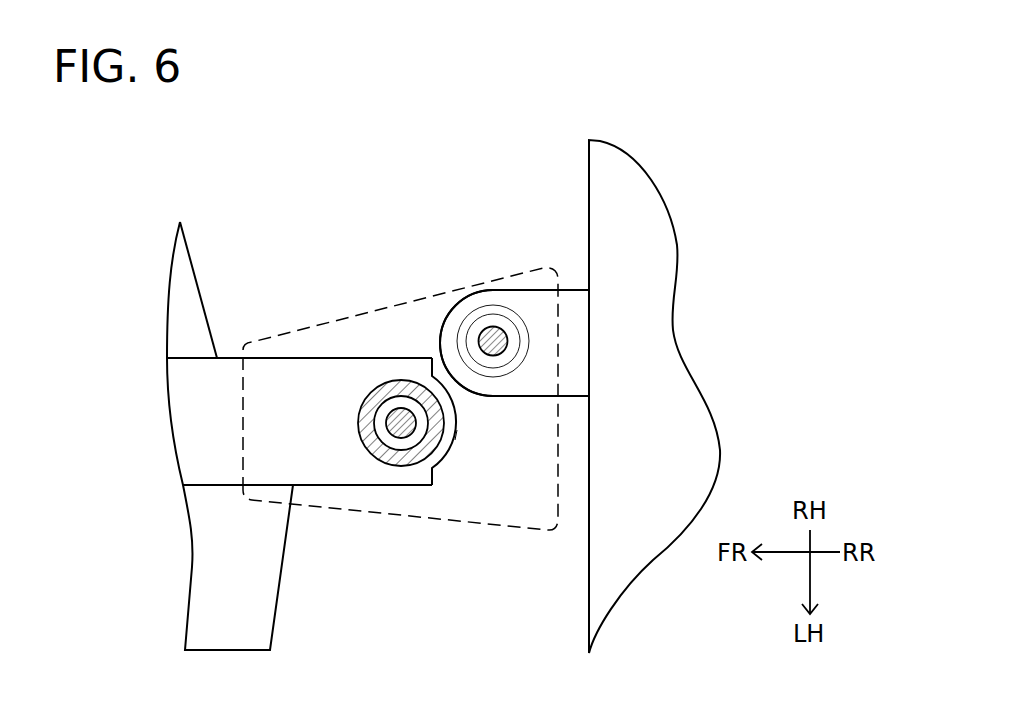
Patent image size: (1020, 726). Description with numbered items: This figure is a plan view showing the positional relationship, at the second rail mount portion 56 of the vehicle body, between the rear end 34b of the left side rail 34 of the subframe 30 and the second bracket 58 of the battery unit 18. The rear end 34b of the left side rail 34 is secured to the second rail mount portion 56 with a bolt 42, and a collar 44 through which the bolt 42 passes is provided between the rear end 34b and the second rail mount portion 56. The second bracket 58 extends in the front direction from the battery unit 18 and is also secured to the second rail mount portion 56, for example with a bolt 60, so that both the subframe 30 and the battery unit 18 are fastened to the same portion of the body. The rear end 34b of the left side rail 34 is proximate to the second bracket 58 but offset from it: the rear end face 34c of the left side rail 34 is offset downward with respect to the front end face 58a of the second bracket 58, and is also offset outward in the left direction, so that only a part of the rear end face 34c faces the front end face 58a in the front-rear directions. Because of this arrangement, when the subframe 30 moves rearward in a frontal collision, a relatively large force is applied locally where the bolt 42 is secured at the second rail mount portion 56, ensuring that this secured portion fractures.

The battery unit 18 is at (652, 278).
The subframe 30 is at (158, 270).
The left side rail 34 is at (212, 433).
The rear end of the left side rail 34b is at (378, 373).
The rear end face of the left side rail 34c is at (462, 440).
The bolt 42 is at (402, 428).
The collar 44 is at (378, 452).
The second rail mount portion 56 is at (467, 522).
The second bracket 58 is at (515, 297).
The front end face of the second bracket 58a is at (440, 340).
The bolt 60 is at (493, 345).